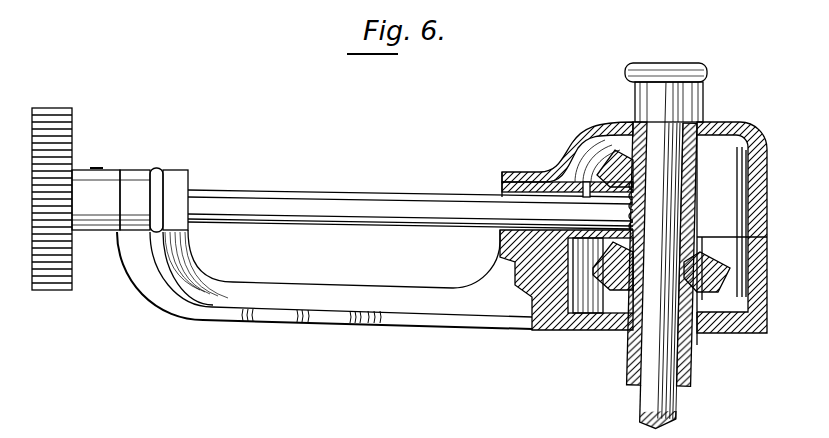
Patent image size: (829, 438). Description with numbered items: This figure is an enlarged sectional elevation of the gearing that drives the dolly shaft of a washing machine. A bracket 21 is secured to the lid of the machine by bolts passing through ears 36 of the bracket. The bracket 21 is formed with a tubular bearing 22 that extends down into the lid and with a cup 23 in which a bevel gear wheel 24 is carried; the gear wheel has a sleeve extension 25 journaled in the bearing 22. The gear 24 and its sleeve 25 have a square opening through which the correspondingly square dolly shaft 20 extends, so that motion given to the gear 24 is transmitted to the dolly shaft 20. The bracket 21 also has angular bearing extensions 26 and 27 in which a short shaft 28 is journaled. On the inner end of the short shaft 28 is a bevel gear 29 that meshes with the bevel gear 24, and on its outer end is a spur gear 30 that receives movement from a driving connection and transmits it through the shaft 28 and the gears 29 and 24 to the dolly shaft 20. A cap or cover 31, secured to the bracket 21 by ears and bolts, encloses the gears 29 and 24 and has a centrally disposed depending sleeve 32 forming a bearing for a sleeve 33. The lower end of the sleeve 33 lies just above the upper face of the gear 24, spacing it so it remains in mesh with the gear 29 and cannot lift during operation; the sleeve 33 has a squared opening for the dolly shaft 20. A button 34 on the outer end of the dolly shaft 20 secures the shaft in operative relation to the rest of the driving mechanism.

The dolly shaft 20 is at (643, 410).
The bracket 21 is at (450, 323).
The tubular bearing 22 is at (699, 376).
The cup 23 is at (597, 297).
The bevel gear wheel 24 is at (702, 262).
The sleeve extension 25 is at (700, 345).
The angular bearing extension 26 is at (500, 250).
The angular bearing extension 27 is at (185, 247).
The short shaft 28 is at (362, 196).
The bevel gear 29 is at (606, 122).
The spur gear 30 is at (50, 290).
The cap or cover 31 is at (732, 210).
The depending sleeve 32 is at (697, 172).
The sleeve 33 is at (697, 208).
The button 34 is at (672, 66).
The ear 36 is at (273, 319).